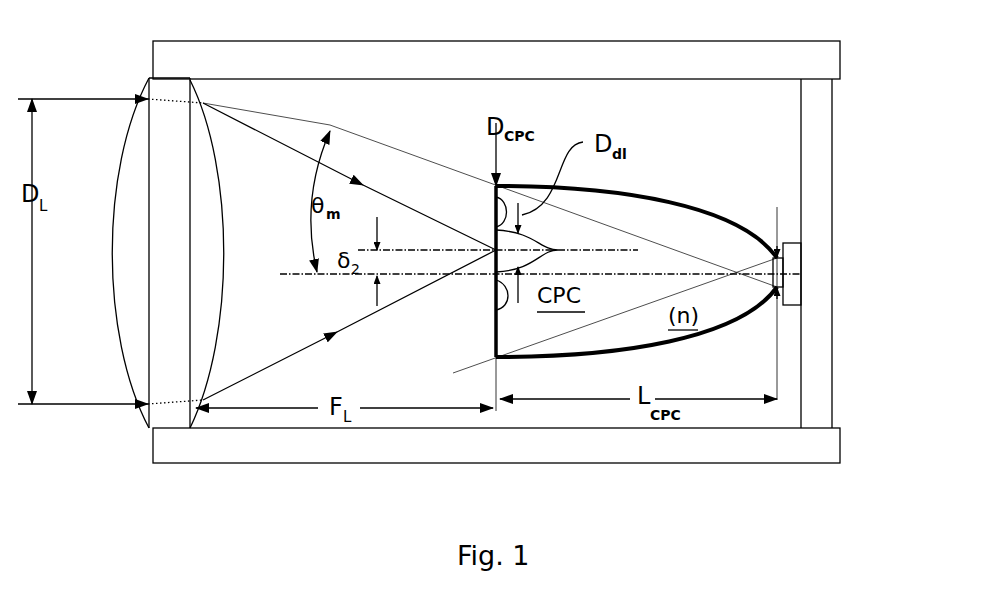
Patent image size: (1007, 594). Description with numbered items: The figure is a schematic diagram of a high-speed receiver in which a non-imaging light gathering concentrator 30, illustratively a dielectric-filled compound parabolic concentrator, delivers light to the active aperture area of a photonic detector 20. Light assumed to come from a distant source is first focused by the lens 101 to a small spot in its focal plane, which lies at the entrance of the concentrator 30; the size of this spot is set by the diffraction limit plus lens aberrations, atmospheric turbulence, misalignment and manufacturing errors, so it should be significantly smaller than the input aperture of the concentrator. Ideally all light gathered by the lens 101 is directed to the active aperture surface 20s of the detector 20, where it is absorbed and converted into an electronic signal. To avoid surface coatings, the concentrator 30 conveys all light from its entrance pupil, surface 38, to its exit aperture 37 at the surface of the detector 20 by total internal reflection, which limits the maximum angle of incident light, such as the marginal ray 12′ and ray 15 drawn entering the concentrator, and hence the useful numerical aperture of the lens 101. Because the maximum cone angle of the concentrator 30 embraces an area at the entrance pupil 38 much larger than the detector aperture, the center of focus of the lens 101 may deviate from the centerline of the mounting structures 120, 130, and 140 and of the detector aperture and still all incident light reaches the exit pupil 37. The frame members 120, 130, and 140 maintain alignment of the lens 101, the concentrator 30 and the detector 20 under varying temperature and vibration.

The mounting structure 120 is at (342, 38).
The mounting structure 130 is at (822, 132).
The mounting structure 140 is at (340, 461).
The lens 101 is at (172, 177).
The marginal light ray 12′ is at (490, 195).
The non-imaging light gathering concentrator 30 is at (693, 242).
The entrance pupil 38 is at (496, 321).
The exit aperture 37 is at (777, 333).
The light ray 15 is at (601, 323).
The detector 20 is at (787, 265).
The active aperture surface 20s is at (782, 283).